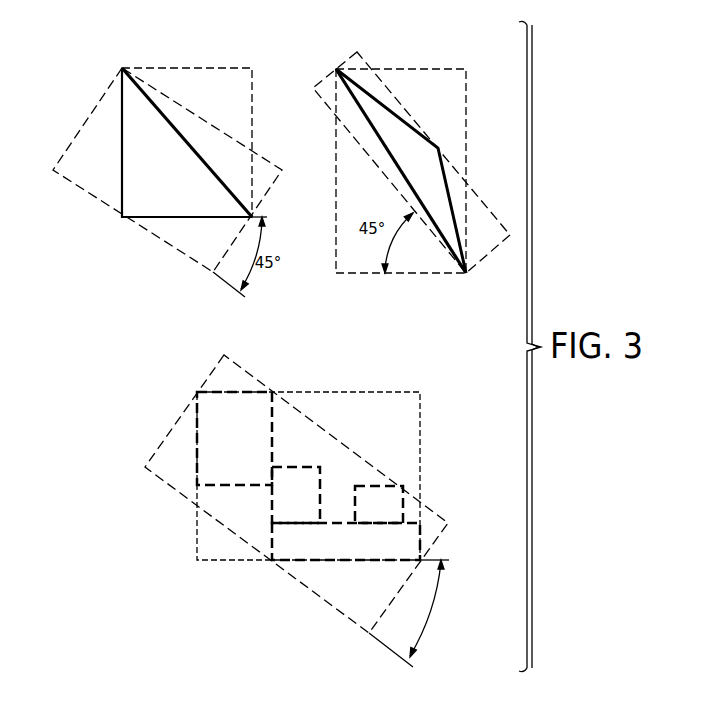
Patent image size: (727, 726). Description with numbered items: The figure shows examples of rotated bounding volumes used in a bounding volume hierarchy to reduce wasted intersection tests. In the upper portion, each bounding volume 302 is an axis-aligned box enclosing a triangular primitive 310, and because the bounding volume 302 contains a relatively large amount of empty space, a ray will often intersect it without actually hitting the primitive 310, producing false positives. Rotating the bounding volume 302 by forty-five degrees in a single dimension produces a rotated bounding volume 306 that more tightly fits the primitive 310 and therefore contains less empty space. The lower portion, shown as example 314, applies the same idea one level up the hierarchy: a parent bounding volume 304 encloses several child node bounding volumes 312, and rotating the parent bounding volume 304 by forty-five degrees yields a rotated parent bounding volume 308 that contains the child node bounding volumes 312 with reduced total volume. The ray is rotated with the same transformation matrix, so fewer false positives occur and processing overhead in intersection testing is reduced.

The bounding volume 302 is at (183, 67).
The parent bounding volume 304 is at (222, 562).
The rotated bounding volume 306 is at (90, 115).
The rotated parent bounding volume 308 is at (317, 597).
The primitive 310 is at (143, 184).
The child node bounding volumes 312 is at (218, 451).
The example 314 is at (266, 511).